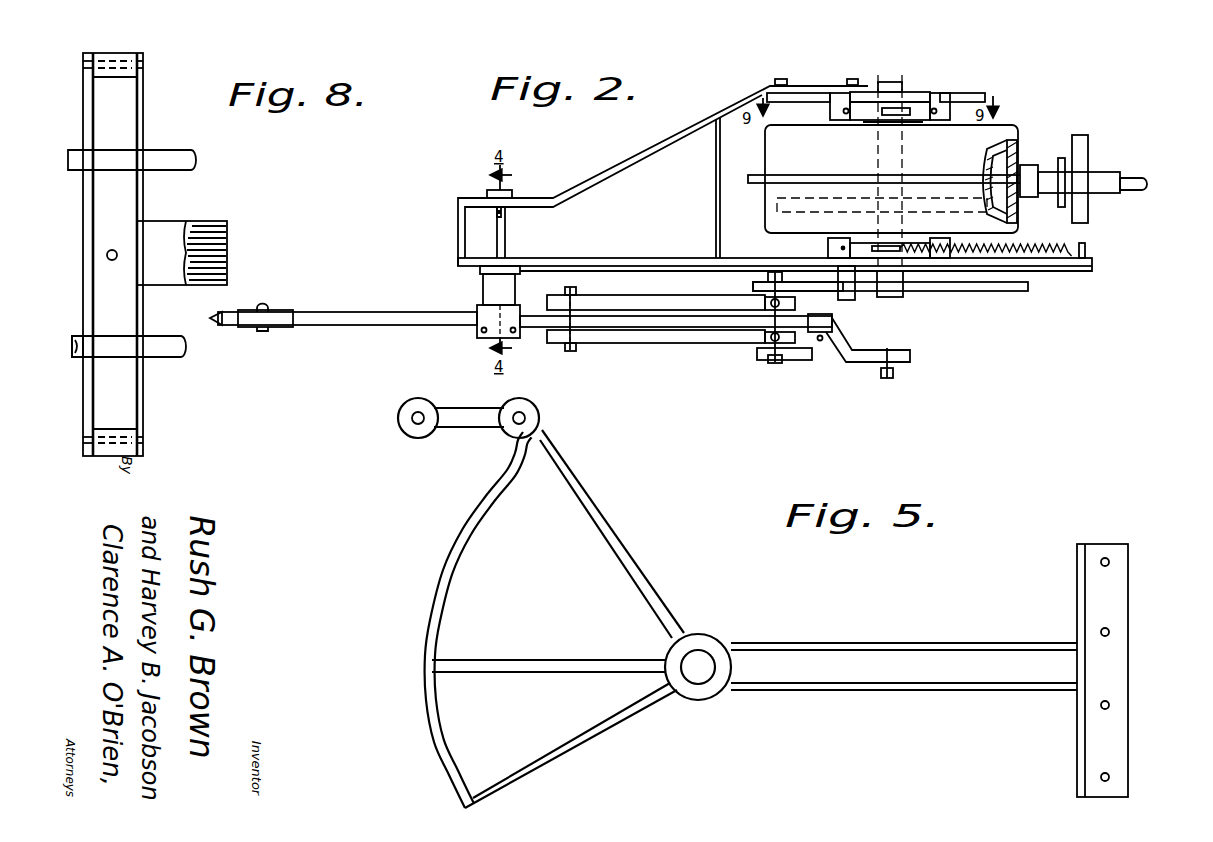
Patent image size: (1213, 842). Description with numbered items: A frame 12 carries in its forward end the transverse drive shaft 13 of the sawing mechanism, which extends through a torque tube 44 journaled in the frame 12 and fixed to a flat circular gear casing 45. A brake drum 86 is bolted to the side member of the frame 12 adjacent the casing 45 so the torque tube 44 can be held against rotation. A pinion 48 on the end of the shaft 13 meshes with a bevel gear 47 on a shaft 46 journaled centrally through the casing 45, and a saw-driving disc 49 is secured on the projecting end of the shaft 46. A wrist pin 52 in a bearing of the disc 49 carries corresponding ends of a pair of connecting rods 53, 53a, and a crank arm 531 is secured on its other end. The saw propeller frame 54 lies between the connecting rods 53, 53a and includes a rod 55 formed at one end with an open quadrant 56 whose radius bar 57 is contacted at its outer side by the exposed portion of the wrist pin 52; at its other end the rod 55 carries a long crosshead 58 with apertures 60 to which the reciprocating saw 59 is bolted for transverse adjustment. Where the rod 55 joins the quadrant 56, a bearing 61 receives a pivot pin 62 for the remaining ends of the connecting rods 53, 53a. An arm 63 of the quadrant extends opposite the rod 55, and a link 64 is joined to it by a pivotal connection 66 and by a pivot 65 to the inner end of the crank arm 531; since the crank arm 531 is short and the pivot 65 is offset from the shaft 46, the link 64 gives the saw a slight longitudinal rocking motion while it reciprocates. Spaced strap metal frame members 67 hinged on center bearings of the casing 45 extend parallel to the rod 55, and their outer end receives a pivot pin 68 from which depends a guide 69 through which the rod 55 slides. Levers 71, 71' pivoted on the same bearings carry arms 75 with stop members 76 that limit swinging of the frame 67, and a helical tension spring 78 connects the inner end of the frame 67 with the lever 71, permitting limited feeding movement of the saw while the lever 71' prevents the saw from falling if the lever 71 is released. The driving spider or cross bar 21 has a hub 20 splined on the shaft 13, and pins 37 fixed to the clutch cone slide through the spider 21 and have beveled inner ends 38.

In FIG. 2, the frame 12 is at (1050, 196).
In FIG. 2, the drive shaft 13 is at (1143, 178).
In FIG. 8, the hub 20 is at (165, 227).
In FIG. 8, the driving spider 21 is at (83, 197).
In FIG. 8, the pins 37 is at (159, 152).
In FIG. 8, the beveled inner ends 38 is at (76, 358).
In FIG. 2, the torque tube 44 is at (1033, 165).
In FIG. 2, the gear casing 45 is at (1012, 125).
In FIG. 2, the shaft 46 is at (905, 278).
In FIG. 2, the bevel gear 47 is at (807, 200).
In FIG. 2, the pinion 48 is at (992, 178).
In FIG. 2, the saw-driving disc 49 is at (1005, 292).
In FIG. 2, the wrist pin 52 is at (753, 284).
In FIG. 2, the connecting rod 53 is at (660, 292).
In FIG. 2, the connecting rod 53a is at (670, 342).
In FIG. 2, the crank arm 531 is at (762, 361).
In FIG. 2, the saw propeller frame 54 is at (640, 324).
In FIG. 5, the saw propeller frame 54 is at (696, 616).
In FIG. 2, the rod 55 is at (385, 312).
In FIG. 5, the rod 55 is at (865, 645).
In FIG. 5, the open quadrant 56 is at (622, 548).
In FIG. 5, the radius bar 57 is at (432, 586).
In FIG. 2, the crosshead 58 is at (265, 330).
In FIG. 5, the crosshead 58 is at (1085, 740).
In FIG. 2, the reciprocating saw 59 is at (233, 312).
In FIG. 5, the apertures 60 is at (1110, 703).
In FIG. 2, the bearing 61 is at (550, 303).
In FIG. 5, the bearing 61 is at (703, 700).
In FIG. 2, the pivot pin 62 is at (566, 287).
In FIG. 2, the arm 63 is at (803, 345).
In FIG. 5, the arm 63 is at (462, 428).
In FIG. 2, the link 64 is at (873, 364).
In FIG. 2, the pivot 65 is at (900, 368).
In FIG. 2, the pivotal connection 66 is at (832, 342).
In FIG. 2, the frame members 67 is at (766, 88).
In FIG. 2, the pivot pin 68 is at (465, 228).
In FIG. 2, the guide 69 is at (487, 318).
In FIG. 2, the lever 71 is at (892, 235).
In FIG. 2, the lever 71' is at (905, 85).
In FIG. 2, the arms 75 is at (828, 110).
In FIG. 2, the stop members 76 is at (842, 93).
In FIG. 2, the helical tension spring 78 is at (1062, 248).
In FIG. 2, the brake drum 86 is at (1083, 135).